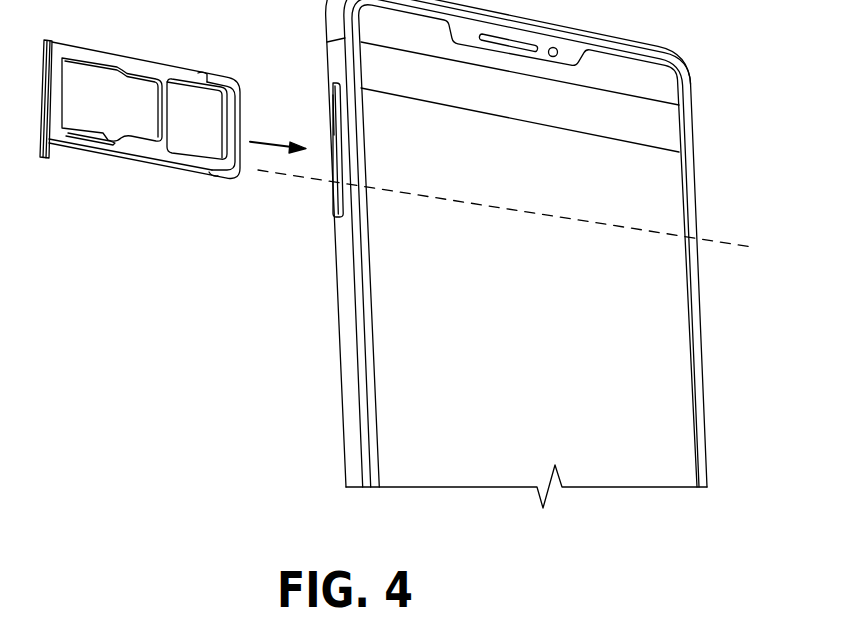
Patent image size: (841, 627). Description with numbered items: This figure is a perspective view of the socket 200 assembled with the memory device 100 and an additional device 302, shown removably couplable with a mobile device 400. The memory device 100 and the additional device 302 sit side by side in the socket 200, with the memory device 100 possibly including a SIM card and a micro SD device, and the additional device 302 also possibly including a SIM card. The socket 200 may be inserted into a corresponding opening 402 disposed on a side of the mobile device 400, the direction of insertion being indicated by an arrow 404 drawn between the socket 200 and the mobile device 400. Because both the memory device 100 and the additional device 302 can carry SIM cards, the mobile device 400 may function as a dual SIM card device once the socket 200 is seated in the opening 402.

The memory device 100 is at (98, 140).
The socket 200 is at (107, 52).
The additional device 302 is at (203, 175).
The mobile device 400 is at (685, 362).
The opening 402 is at (322, 180).
The arrow 404 is at (330, 113).